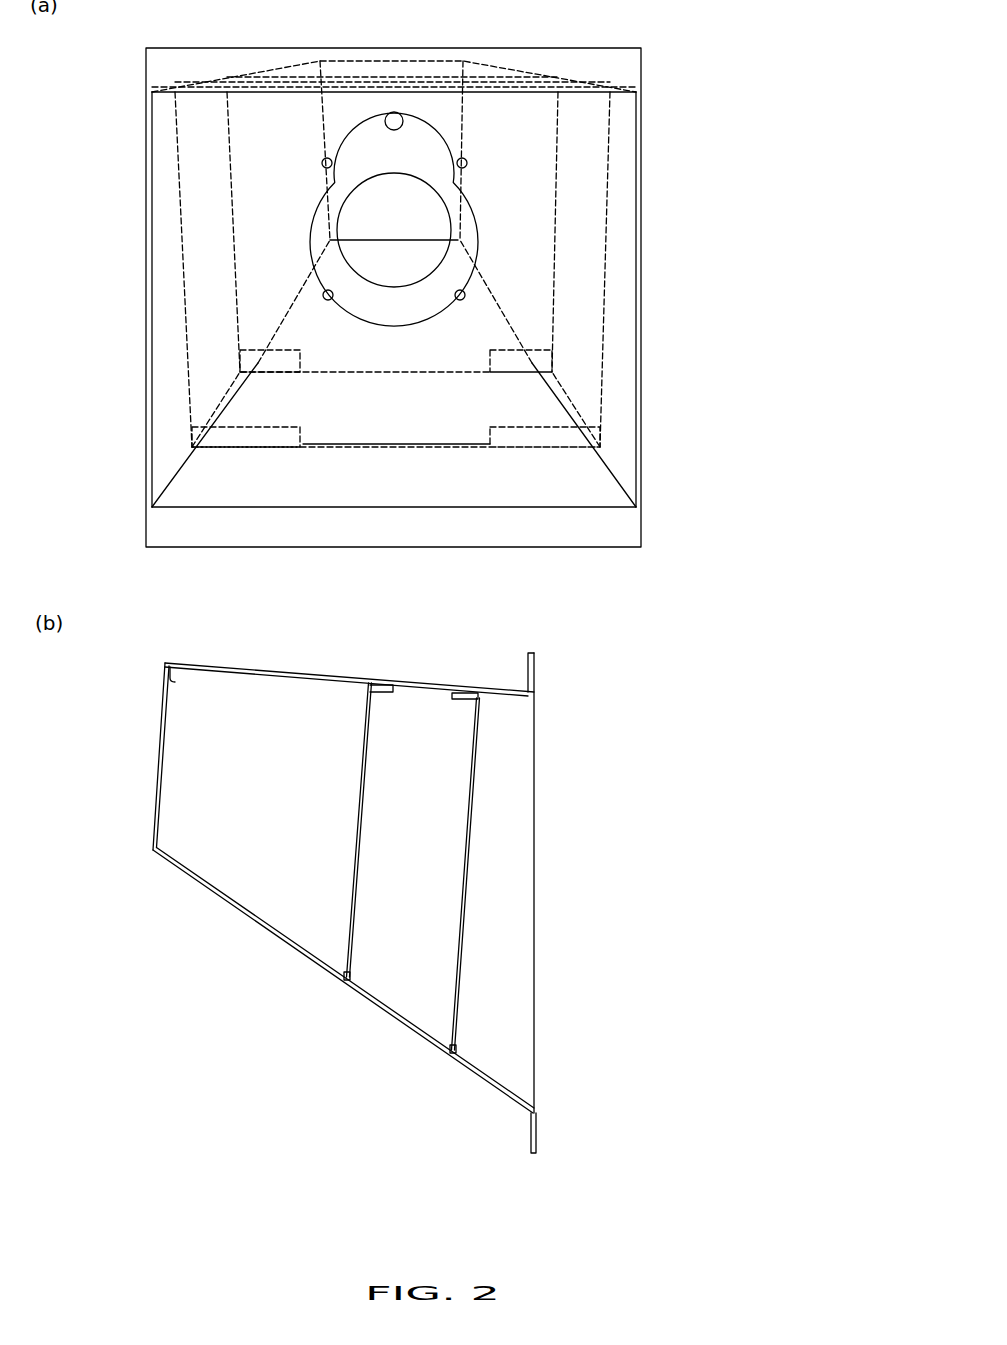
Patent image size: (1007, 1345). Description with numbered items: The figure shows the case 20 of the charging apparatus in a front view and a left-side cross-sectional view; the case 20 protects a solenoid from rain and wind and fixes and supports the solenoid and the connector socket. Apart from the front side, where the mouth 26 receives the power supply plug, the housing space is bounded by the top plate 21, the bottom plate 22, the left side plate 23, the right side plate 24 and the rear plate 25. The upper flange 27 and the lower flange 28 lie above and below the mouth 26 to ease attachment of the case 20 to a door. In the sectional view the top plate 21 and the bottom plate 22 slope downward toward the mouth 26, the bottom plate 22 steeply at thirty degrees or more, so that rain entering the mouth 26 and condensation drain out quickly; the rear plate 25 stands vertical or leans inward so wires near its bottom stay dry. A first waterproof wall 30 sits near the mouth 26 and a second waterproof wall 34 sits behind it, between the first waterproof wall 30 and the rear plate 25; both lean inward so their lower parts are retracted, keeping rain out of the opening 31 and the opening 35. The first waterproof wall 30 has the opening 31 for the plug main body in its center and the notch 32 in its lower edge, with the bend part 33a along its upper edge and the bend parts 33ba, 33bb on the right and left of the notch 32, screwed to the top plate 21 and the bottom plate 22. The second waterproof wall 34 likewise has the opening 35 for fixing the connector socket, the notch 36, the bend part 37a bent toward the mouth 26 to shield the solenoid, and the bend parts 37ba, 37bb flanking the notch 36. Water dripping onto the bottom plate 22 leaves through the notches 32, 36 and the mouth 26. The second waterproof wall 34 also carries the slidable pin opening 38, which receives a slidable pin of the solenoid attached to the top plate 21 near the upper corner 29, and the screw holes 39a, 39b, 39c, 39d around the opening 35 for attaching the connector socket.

The case 20 is at (641, 547).
The top plate 21 is at (247, 670).
The bottom plate 22 is at (297, 499).
The left side plate 23 is at (148, 292).
The right side plate 24 is at (643, 310).
The rear plate 25 is at (440, 100).
The mouth 26 is at (534, 823).
The upper flange 27 is at (632, 67).
The lower flange 28 is at (578, 537).
The upper corner 29 is at (167, 682).
The first waterproof wall 30 is at (587, 263).
The opening 31 is at (478, 227).
The notch 32 is at (410, 447).
The bend part 33a is at (590, 85).
The bend part 33ba is at (573, 440).
The bend part 33bb is at (223, 438).
The second waterproof wall 34 is at (245, 267).
The opening 35 is at (332, 222).
The notch 36 is at (393, 375).
The bend part 37a is at (517, 75).
The bend part 37ba is at (530, 362).
The bend part 37bb is at (262, 362).
The slidable pin opening 38 is at (388, 113).
The screw hole 39a is at (463, 163).
The screw hole 39b is at (327, 163).
The screw hole 39c is at (460, 295).
The screw hole 39d is at (328, 295).